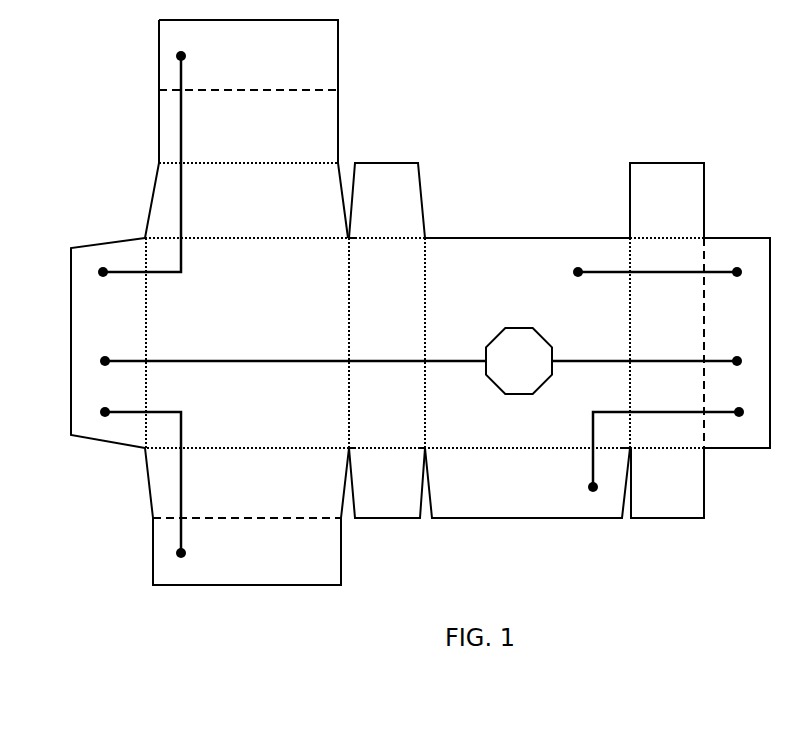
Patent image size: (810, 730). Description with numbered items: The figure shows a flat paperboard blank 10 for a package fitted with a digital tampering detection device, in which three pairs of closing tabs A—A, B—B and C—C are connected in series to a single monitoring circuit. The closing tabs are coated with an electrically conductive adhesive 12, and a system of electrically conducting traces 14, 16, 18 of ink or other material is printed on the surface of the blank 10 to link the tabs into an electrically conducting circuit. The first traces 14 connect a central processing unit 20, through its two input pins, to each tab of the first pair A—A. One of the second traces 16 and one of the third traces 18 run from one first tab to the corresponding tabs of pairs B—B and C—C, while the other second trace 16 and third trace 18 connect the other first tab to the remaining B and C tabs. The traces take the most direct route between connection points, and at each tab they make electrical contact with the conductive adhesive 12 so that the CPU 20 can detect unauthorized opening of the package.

The blank 10 is at (388, 222).
The electrically conductive adhesive 12 is at (193, 52).
The first traces 14 is at (312, 362).
The second traces 16 is at (177, 412).
The third traces 18 is at (181, 222).
The central processing unit 20 is at (518, 386).